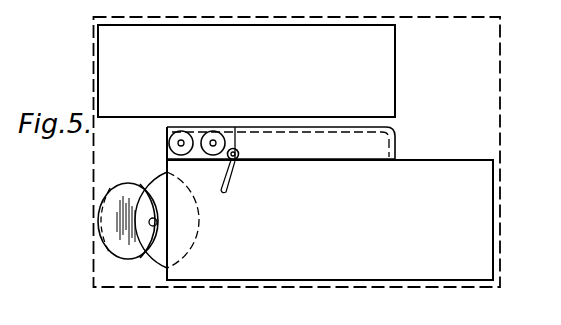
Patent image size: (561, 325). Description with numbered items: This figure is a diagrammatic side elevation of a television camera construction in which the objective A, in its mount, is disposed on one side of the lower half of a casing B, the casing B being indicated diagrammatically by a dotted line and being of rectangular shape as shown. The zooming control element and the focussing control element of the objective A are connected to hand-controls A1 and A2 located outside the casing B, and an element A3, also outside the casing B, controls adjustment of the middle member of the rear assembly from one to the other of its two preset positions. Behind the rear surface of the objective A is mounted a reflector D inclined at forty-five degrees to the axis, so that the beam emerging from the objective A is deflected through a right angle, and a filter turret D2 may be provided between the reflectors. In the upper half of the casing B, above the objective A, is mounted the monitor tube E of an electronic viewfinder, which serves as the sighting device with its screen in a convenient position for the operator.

The objective A is at (318, 268).
The zooming hand-control A1 is at (180, 131).
The focussing hand-control A2 is at (213, 131).
The adjustment control element A3 is at (235, 149).
The casing B is at (500, 100).
The reflector D is at (97, 223).
The filter turret D2 is at (143, 273).
The monitor tube E is at (106, 58).